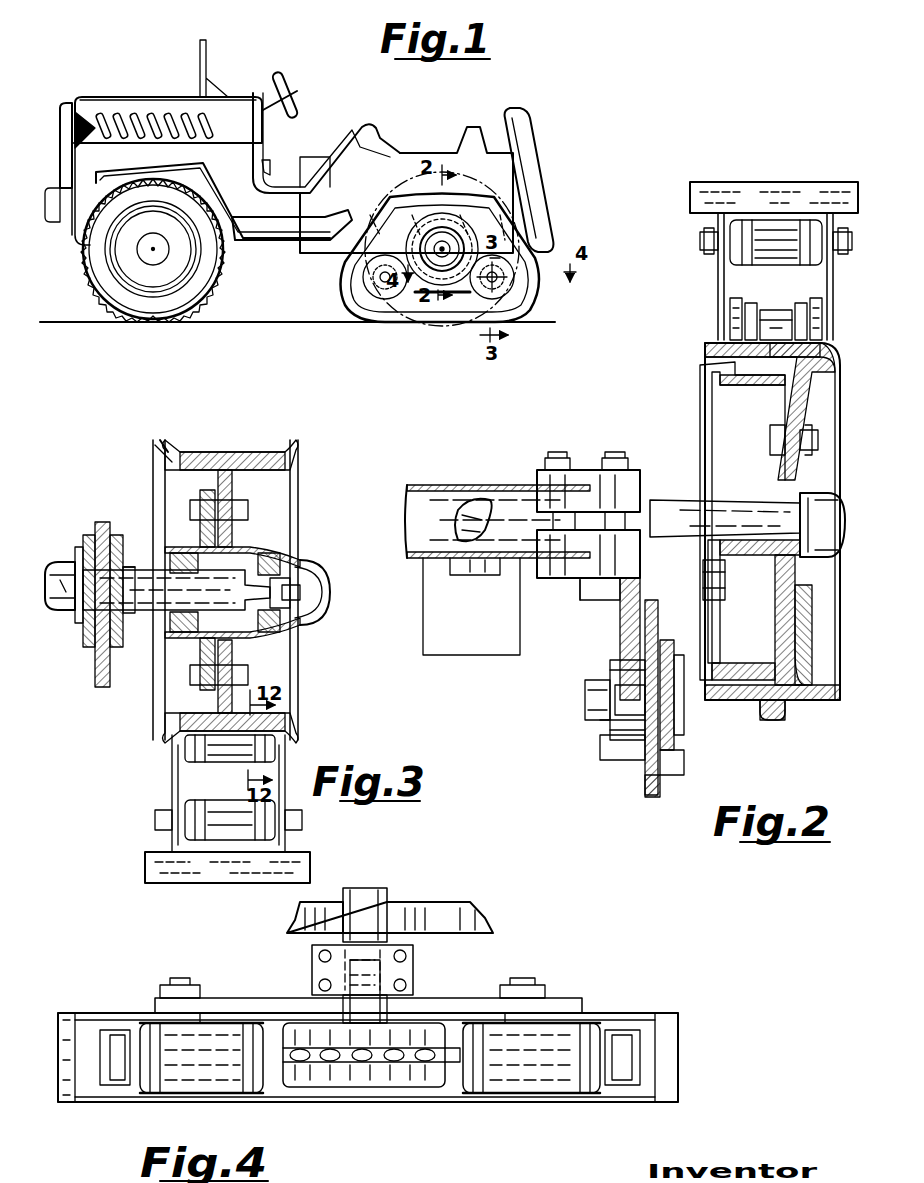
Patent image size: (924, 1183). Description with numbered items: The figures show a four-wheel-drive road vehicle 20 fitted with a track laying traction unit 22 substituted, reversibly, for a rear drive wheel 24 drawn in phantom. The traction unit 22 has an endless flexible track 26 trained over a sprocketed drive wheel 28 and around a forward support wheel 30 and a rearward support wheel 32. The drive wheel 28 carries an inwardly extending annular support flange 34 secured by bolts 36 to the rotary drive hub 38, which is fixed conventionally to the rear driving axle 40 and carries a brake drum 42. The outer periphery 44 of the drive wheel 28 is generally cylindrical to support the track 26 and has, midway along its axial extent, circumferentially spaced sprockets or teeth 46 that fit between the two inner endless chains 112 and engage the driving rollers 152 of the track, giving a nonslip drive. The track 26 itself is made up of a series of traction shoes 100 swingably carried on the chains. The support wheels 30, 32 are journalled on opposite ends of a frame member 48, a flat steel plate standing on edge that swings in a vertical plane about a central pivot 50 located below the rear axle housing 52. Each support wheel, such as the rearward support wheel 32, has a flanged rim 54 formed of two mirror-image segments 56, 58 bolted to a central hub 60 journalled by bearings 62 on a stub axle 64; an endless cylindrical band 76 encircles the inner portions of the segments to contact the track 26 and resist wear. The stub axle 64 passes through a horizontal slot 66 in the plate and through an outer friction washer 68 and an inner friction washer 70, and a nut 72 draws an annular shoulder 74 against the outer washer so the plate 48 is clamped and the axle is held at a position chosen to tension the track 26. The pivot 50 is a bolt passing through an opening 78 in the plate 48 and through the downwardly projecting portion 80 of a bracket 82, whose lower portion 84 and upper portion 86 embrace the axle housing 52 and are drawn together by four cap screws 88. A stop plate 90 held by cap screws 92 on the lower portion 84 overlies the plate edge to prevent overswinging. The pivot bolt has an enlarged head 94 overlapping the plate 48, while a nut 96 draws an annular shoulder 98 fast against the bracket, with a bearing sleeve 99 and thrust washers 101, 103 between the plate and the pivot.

In FIG. 1, the road vehicle 20 is at (362, 105).
In FIG. 1, the track laying traction unit 22 is at (548, 262).
In FIG. 1, the rear drive wheel 24 is at (398, 175).
In FIG. 1, the endless flexible track 26 is at (398, 220).
In FIG. 2, the endless flexible track 26 is at (712, 270).
In FIG. 3, the endless flexible track 26 is at (170, 784).
In FIG. 4, the endless flexible track 26 is at (60, 1012).
In FIG. 1, the sprocketed drive wheel 28 is at (470, 215).
In FIG. 2, the sprocketed drive wheel 28 is at (840, 690).
In FIG. 4, the sprocketed drive wheel 28 is at (402, 1090).
In FIG. 1, the forward support wheel 30 is at (378, 300).
In FIG. 4, the forward support wheel 30 is at (235, 1095).
In FIG. 1, the rearward support wheel 32 is at (505, 290).
In FIG. 3, the rearward support wheel 32 is at (305, 697).
In FIG. 4, the rearward support wheel 32 is at (500, 1095).
In FIG. 2, the annular support flange 34 is at (812, 622).
In FIG. 2, the bolts 36 is at (805, 440).
In FIG. 2, the rotary drive hub 38 is at (800, 478).
In FIG. 2, the rear driving axle 40 is at (478, 505).
In FIG. 2, the brake drum 42 is at (735, 388).
In FIG. 2, the outer periphery 44 is at (750, 717).
In FIG. 2, the sprockets or teeth 46 is at (775, 712).
In FIG. 4, the sprockets or teeth 46 is at (365, 1062).
In FIG. 1, the frame member 48 is at (465, 310).
In FIG. 2, the frame member 48 is at (645, 782).
In FIG. 3, the frame member 48 is at (100, 665).
In FIG. 4, the frame member 48 is at (480, 998).
In FIG. 2, the central pivot 50 is at (620, 702).
In FIG. 2, the rear axle housing 52 is at (430, 485).
In FIG. 4, the rear axle housing 52 is at (368, 927).
In FIG. 3, the flanged rim 54 is at (170, 440).
In FIG. 3, the rim segment 56 is at (160, 460).
In FIG. 3, the rim segment 58 is at (298, 472).
In FIG. 3, the central hub 60 is at (255, 547).
In FIG. 3, the bearings 62 is at (185, 635).
In FIG. 3, the stub axle 64 is at (148, 625).
In FIG. 3, the horizontal slot 66 is at (85, 617).
In FIG. 3, the outer friction washer 68 is at (115, 540).
In FIG. 3, the inner friction washer 70 is at (90, 535).
In FIG. 3, the nut 72 is at (62, 592).
In FIG. 3, the annular shoulder 74 is at (130, 560).
In FIG. 3, the endless cylindrical band 76 is at (215, 452).
In FIG. 4, the endless cylindrical band 76 is at (150, 1025).
In FIG. 2, the opening 78 is at (680, 720).
In FIG. 2, the downwardly projecting bracket portion 80 is at (610, 742).
In FIG. 2, the bracket 82 is at (600, 632).
In FIG. 2, the lower bracket portion 84 is at (580, 575).
In FIG. 2, the upper bracket portion 86 is at (590, 470).
In FIG. 4, the upper bracket portion 86 is at (415, 977).
In FIG. 2, the cap screws 88 is at (555, 455).
In FIG. 4, the cap screws 88 is at (322, 985).
In FIG. 2, the stop plate 90 is at (722, 624).
In FIG. 2, the cap screws 92 is at (725, 596).
In FIG. 2, the enlarged head 94 is at (668, 742).
In FIG. 2, the nut 96 is at (585, 695).
In FIG. 2, the annular shoulder 98 is at (678, 698).
In FIG. 2, the bearing sleeve 99 is at (600, 688).
In FIG. 2, the traction shoes 100 is at (745, 183).
In FIG. 3, the traction shoes 100 is at (150, 874).
In FIG. 4, the traction shoes 100 is at (62, 1087).
In FIG. 2, the thrust washer 101 is at (600, 727).
In FIG. 2, the thrust washer 103 is at (660, 782).
In FIG. 2, the inner endless chains 112 is at (735, 297).
In FIG. 2, the driving rollers 152 is at (772, 308).